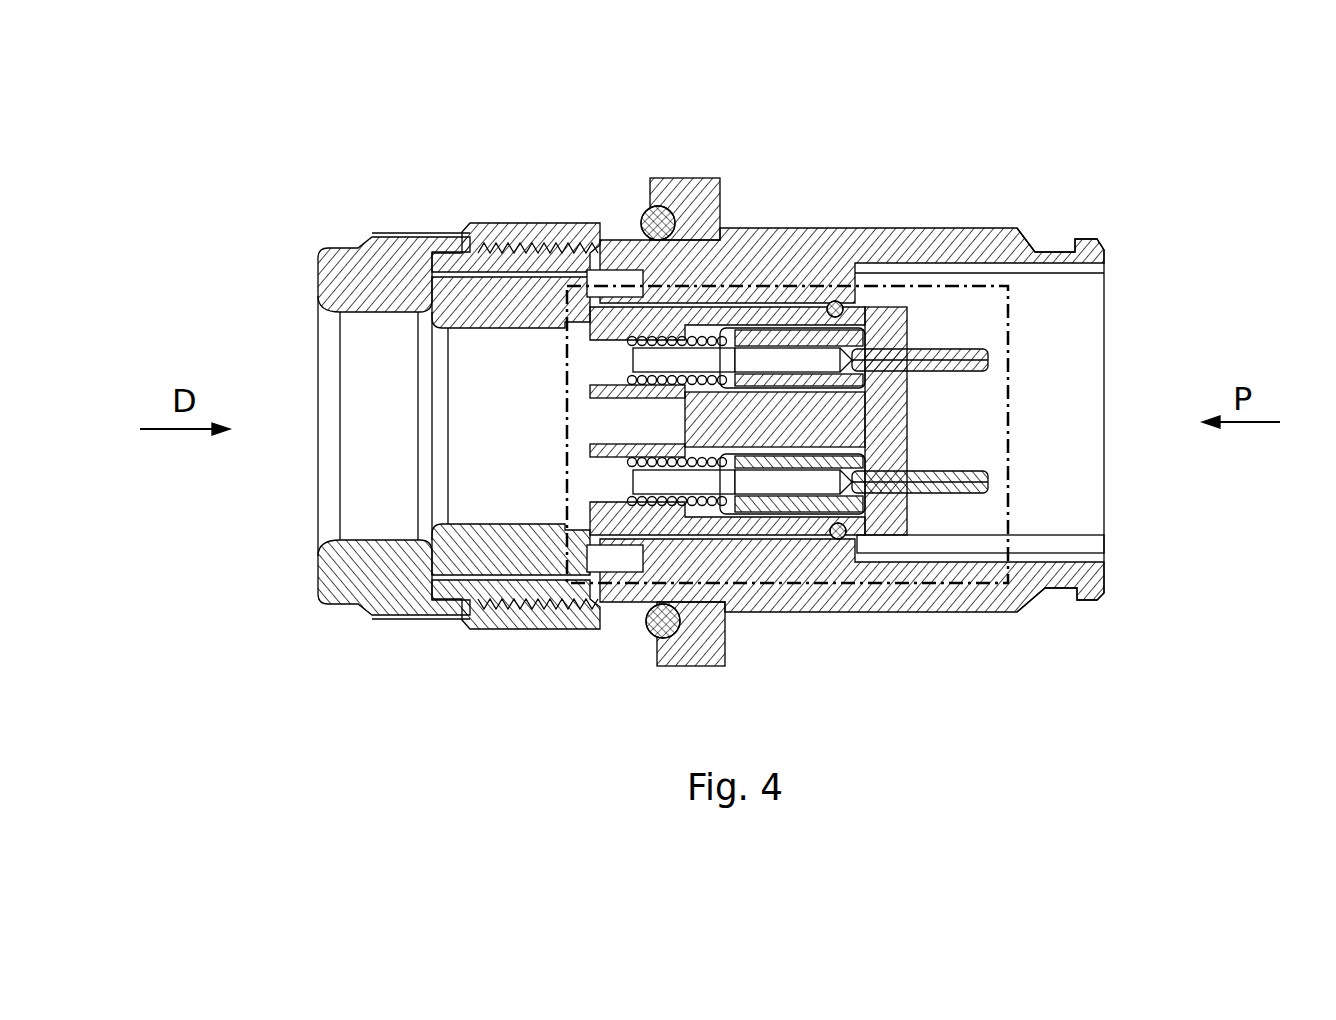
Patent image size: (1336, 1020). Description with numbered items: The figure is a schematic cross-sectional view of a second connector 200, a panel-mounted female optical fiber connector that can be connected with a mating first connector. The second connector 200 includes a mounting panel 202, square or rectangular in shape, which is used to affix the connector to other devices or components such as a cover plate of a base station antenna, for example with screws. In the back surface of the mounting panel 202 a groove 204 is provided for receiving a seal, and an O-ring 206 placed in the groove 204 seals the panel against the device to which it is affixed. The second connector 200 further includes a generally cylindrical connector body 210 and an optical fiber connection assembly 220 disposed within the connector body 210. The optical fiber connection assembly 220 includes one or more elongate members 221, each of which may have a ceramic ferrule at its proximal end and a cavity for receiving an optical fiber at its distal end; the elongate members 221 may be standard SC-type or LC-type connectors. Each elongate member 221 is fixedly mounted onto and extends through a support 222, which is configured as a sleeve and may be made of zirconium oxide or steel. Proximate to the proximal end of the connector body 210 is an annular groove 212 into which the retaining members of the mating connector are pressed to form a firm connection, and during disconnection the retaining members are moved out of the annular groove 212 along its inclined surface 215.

The second connector 200 is at (182, 124).
The mounting panel 202 is at (680, 192).
The groove 204 is at (660, 640).
The O-ring 206 is at (655, 220).
The connector body 210 is at (792, 255).
The annular groove 212 is at (1050, 250).
The inclined surface 215 is at (1030, 598).
The optical fiber connection assembly 220 is at (941, 565).
The elongate member 221 is at (983, 350).
The support 222 is at (900, 431).